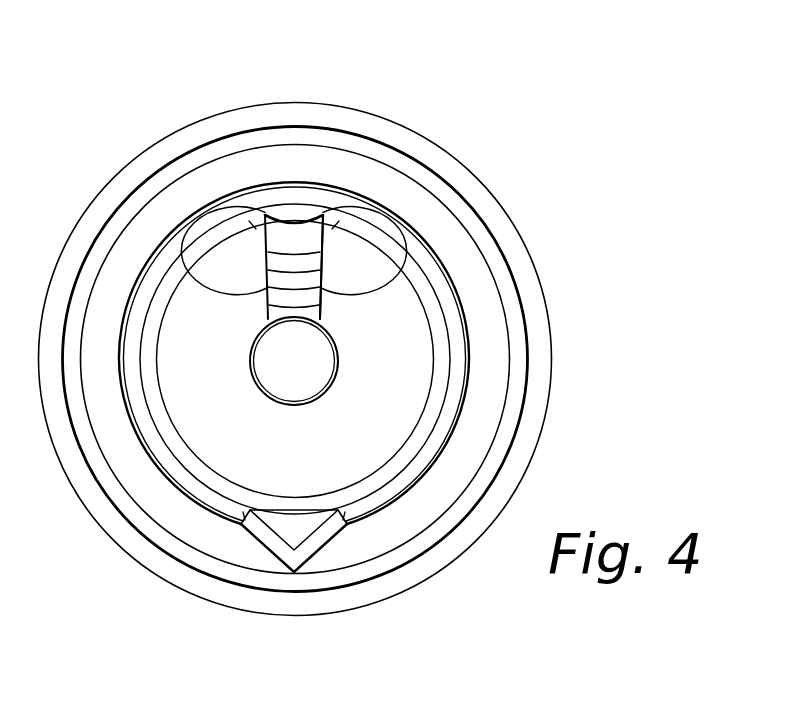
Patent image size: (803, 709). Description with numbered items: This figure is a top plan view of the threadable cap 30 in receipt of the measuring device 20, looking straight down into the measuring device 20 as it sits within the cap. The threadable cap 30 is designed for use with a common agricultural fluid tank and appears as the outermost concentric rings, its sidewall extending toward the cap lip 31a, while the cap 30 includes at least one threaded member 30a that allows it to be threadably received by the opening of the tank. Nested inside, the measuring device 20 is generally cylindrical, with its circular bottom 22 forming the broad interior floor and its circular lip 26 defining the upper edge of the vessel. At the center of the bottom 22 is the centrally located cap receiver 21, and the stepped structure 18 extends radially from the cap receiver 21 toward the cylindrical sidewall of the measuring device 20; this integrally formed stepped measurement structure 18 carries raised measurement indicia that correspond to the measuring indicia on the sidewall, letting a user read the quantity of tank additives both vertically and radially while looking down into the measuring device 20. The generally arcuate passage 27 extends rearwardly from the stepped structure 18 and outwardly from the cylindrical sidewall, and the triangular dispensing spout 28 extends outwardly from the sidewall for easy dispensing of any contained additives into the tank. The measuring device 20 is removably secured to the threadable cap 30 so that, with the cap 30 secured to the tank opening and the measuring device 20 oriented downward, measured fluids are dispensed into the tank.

The threadable cap 30 is at (307, 97).
The threaded member 30a is at (484, 235).
The cap lip 31a is at (538, 280).
The arcuate passage 27 is at (232, 236).
The measuring device 20 is at (325, 188).
The stepped structure 18 is at (343, 285).
The bottom 22 is at (410, 360).
The cap receiver 21 is at (337, 378).
The circular lip 26 is at (420, 480).
The spout 28 is at (315, 543).